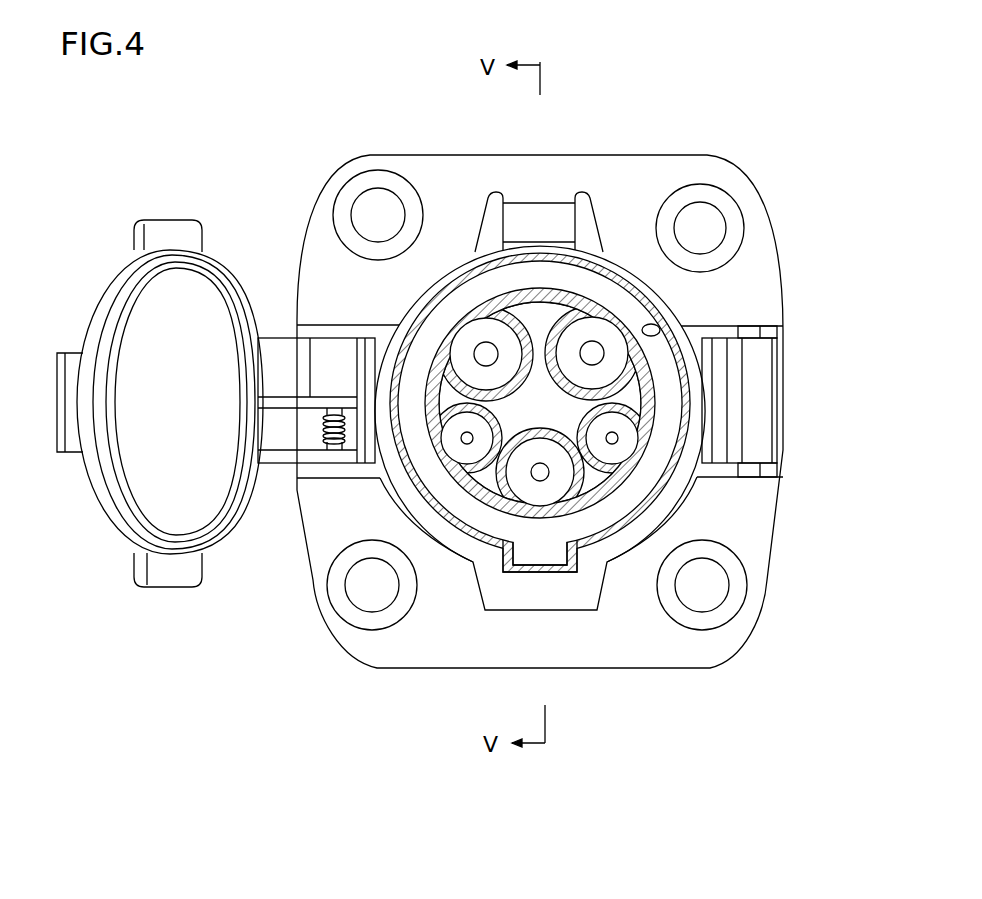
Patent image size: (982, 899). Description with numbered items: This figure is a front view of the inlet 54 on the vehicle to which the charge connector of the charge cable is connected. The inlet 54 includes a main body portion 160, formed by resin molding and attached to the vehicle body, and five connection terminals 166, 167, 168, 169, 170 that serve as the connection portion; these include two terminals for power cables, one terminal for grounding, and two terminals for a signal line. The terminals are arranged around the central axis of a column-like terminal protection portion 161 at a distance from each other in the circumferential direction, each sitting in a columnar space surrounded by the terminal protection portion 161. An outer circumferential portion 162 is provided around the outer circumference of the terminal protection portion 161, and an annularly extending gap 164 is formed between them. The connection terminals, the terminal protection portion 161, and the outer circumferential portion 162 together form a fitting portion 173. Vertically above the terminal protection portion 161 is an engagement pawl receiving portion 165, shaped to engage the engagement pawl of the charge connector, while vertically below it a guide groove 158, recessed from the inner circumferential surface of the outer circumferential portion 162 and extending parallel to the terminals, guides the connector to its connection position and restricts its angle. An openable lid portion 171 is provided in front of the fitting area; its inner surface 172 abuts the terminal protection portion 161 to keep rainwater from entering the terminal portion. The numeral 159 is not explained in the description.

The inlet 54 is at (330, 178).
The guide groove 158 is at (528, 568).
The hole 159 is at (658, 326).
The main body portion 160 is at (768, 224).
The terminal protection portion 161 is at (486, 354).
The outer circumferential portion 162 is at (413, 310).
The gap 164 is at (593, 353).
The engagement pawl receiving portion 165 is at (555, 218).
The connection terminal 166 is at (452, 323).
The connection terminal 167 is at (612, 300).
The connection terminal 168 is at (467, 440).
The connection terminal 169 is at (540, 473).
The connection terminal 170 is at (612, 440).
The lid portion 171 is at (113, 520).
The inner surface 172 is at (195, 318).
The fitting portion 173 is at (662, 295).